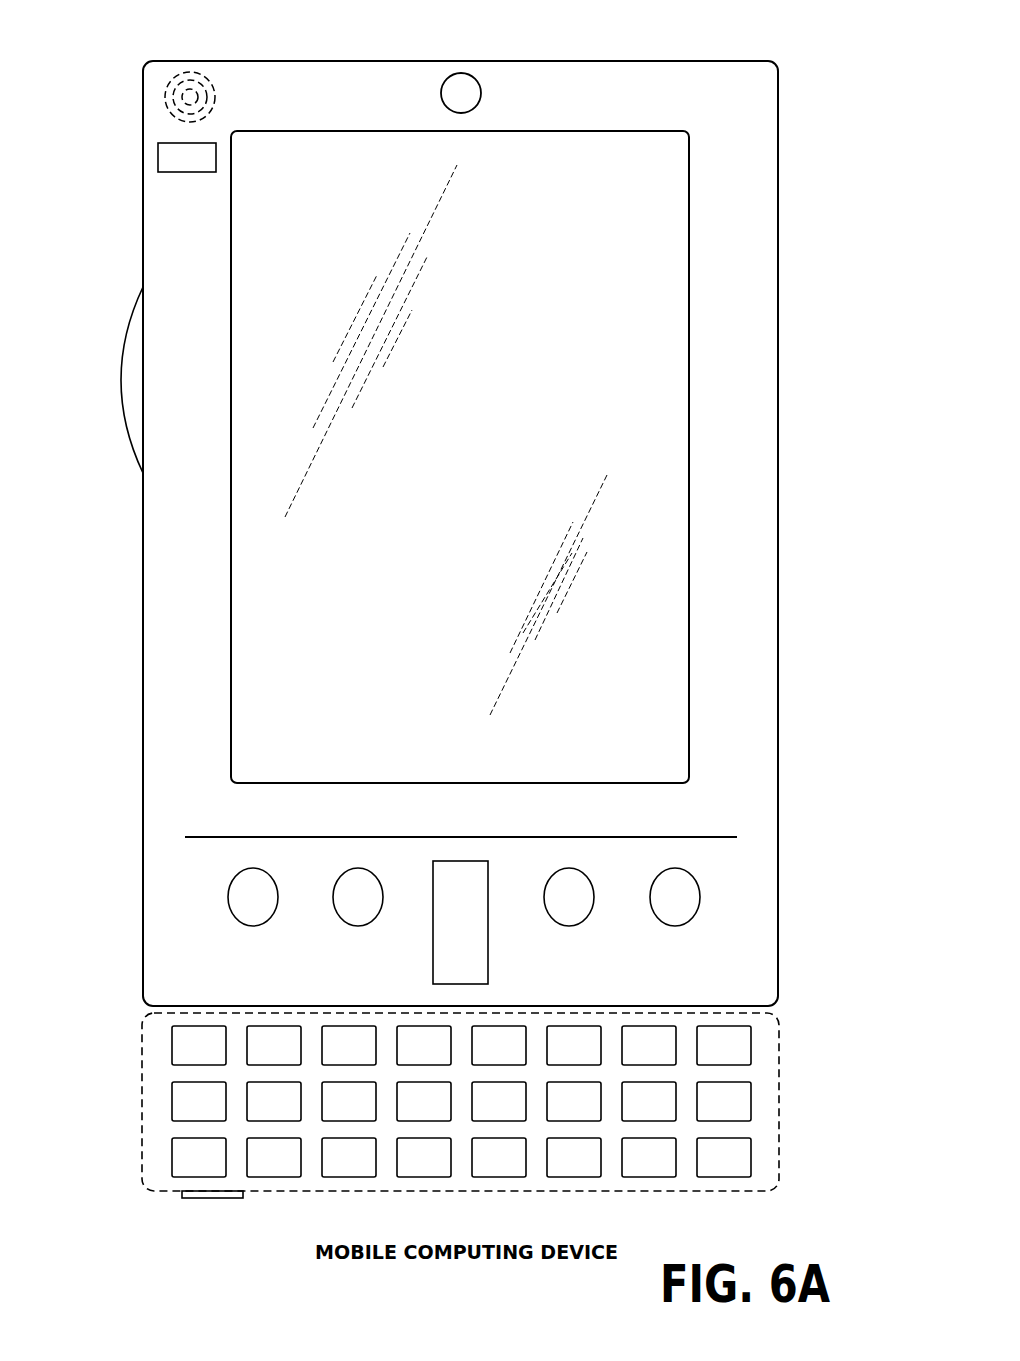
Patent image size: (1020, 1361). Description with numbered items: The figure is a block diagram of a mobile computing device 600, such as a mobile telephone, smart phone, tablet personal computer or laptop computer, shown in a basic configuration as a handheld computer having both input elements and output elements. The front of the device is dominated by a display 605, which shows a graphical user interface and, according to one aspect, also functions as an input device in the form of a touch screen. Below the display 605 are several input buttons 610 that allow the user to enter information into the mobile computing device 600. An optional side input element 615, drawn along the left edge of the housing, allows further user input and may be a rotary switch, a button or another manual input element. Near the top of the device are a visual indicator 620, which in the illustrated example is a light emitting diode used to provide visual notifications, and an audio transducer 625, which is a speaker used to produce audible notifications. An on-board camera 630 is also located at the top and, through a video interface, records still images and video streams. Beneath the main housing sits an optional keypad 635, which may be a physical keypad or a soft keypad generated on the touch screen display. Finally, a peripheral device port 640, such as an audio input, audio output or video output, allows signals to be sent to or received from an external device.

The mobile computing device 600 is at (749, 60).
The display 605 is at (253, 625).
The input buttons 610 is at (252, 926).
The side input element 615 is at (121, 380).
The visual indicator 620 is at (158, 156).
The audio transducer 625 is at (160, 98).
The on-board camera 630 is at (463, 73).
The keypad 635 is at (153, 1102).
The peripheral device port 640 is at (190, 1200).